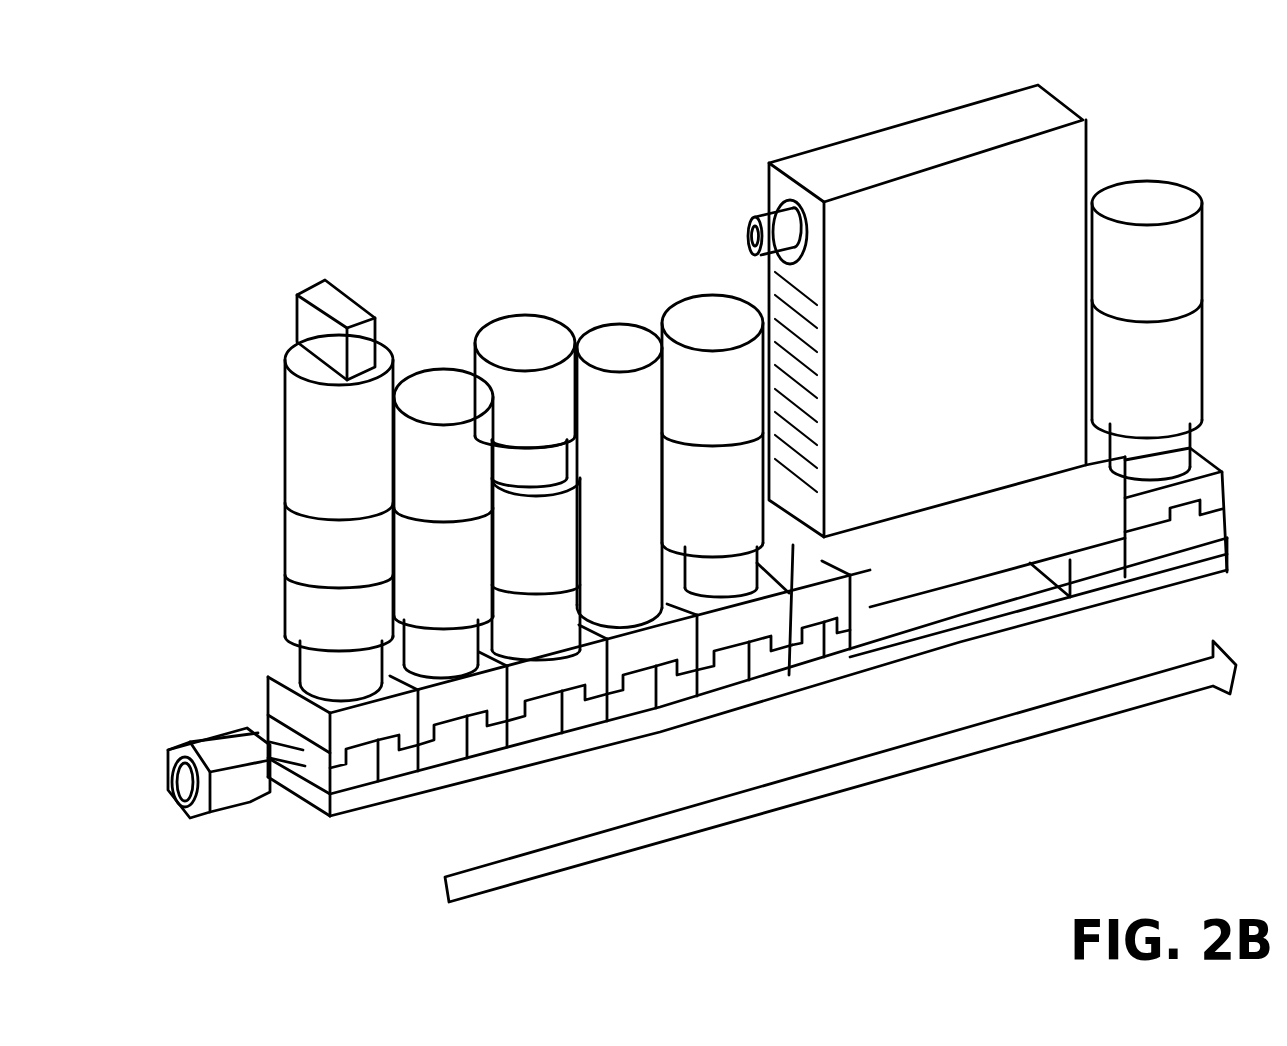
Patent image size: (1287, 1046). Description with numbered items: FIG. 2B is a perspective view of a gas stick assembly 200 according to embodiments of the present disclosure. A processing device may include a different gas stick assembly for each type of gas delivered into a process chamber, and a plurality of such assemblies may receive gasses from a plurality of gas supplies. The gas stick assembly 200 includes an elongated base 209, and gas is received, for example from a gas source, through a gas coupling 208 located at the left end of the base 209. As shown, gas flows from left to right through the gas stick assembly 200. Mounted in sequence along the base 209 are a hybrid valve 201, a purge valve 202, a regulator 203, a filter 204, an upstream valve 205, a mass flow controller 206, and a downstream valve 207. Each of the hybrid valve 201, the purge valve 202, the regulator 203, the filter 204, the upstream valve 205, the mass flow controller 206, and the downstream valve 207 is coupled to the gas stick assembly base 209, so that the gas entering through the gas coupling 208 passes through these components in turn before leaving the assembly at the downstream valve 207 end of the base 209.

The gas stick assembly 200 is at (222, 112).
The hybrid valve 201 is at (285, 416).
The purge valve 202 is at (440, 368).
The regulator 203 is at (520, 316).
The filter 204 is at (597, 326).
The upstream valve 205 is at (716, 296).
The mass flow controller 206 is at (840, 142).
The downstream valve 207 is at (1140, 181).
The gas coupling 208 is at (190, 820).
The base 209 is at (360, 812).